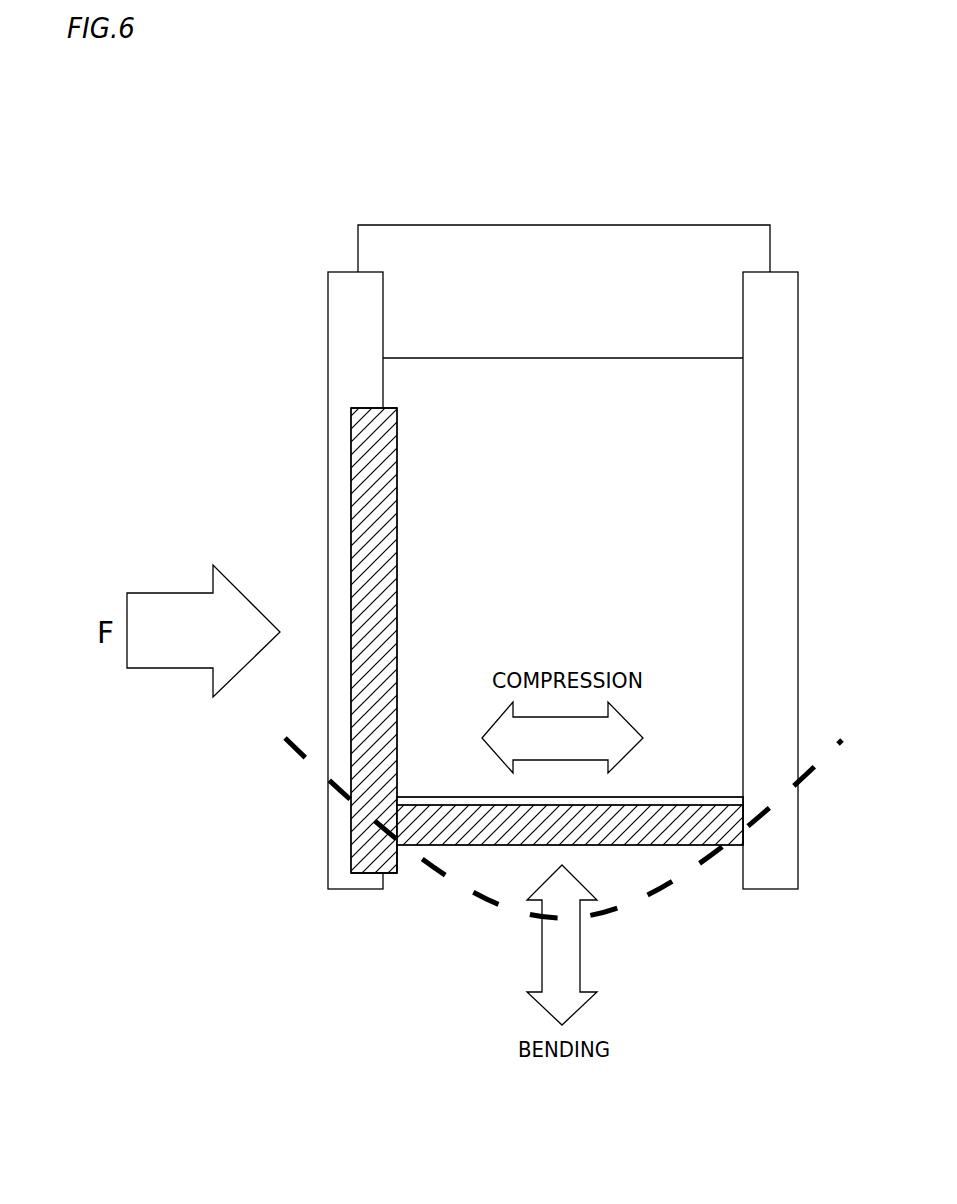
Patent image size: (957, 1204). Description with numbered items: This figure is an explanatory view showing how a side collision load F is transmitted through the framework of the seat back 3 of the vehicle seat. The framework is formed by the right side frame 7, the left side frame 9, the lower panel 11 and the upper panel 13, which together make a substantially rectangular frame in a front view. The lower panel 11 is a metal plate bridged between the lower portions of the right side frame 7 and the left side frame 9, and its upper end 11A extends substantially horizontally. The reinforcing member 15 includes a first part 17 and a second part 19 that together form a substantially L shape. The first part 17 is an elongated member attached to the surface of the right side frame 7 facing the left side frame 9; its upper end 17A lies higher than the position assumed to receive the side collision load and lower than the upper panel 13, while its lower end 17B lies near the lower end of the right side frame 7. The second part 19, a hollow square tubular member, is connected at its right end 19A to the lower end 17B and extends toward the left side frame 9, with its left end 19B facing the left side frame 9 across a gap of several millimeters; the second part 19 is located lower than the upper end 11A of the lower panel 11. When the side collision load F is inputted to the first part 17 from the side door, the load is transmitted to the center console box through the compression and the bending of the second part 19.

The seat back 3 is at (549, 512).
The right side frame 7 is at (348, 375).
The left side frame 9 is at (777, 507).
The upper panel 13 is at (573, 255).
The reinforcing member 15 is at (545, 686).
The first part 17 is at (383, 555).
The upper end 17A is at (383, 415).
The lower end 17B is at (363, 866).
The second part 19 is at (430, 810).
The right end 19A is at (397, 846).
The left end 19B is at (735, 805).
The lower panel 11 is at (569, 774).
The upper end 11A is at (472, 797).